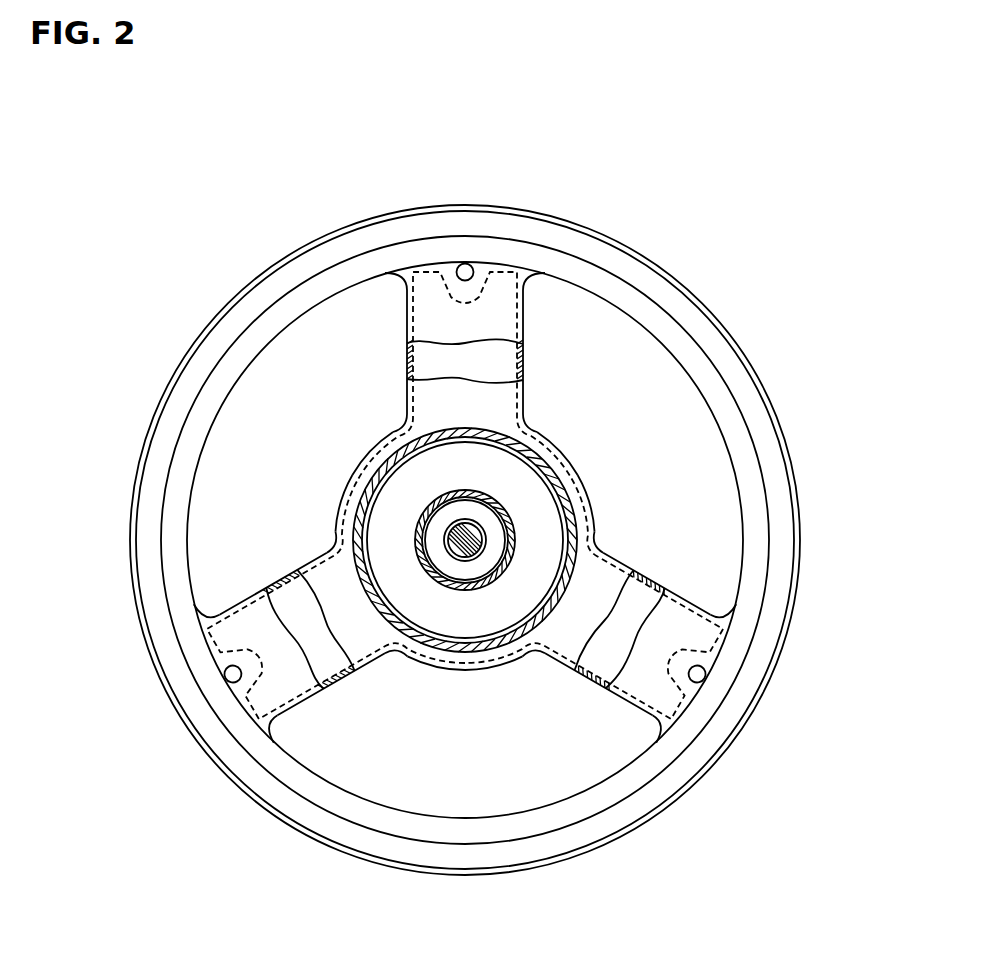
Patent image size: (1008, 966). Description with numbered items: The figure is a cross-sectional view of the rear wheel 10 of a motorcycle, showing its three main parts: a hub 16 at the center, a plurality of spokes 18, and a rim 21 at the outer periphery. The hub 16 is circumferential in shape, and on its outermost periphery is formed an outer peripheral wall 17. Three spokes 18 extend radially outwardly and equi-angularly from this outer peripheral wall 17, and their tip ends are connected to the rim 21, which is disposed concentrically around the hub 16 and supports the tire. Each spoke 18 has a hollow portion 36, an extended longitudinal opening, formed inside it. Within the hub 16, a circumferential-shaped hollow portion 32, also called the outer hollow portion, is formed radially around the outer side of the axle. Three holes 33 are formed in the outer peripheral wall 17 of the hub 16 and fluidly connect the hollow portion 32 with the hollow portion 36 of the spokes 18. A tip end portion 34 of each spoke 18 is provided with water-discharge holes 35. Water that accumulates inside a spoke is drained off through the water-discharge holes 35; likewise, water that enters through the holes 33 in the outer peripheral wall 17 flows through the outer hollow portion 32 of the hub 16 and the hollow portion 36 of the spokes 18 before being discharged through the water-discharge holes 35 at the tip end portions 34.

The rear wheel 10 is at (683, 290).
The hub 16 is at (547, 433).
The outer peripheral wall 17 is at (595, 510).
The spoke 18 is at (533, 333).
The rim 21 is at (230, 305).
The circumferential-shaped hollow portion 32 is at (527, 582).
The hole 33 is at (357, 468).
The tip end portion 34 is at (405, 312).
The water-discharge hole 35 is at (463, 263).
The hollow portion 36 is at (460, 367).